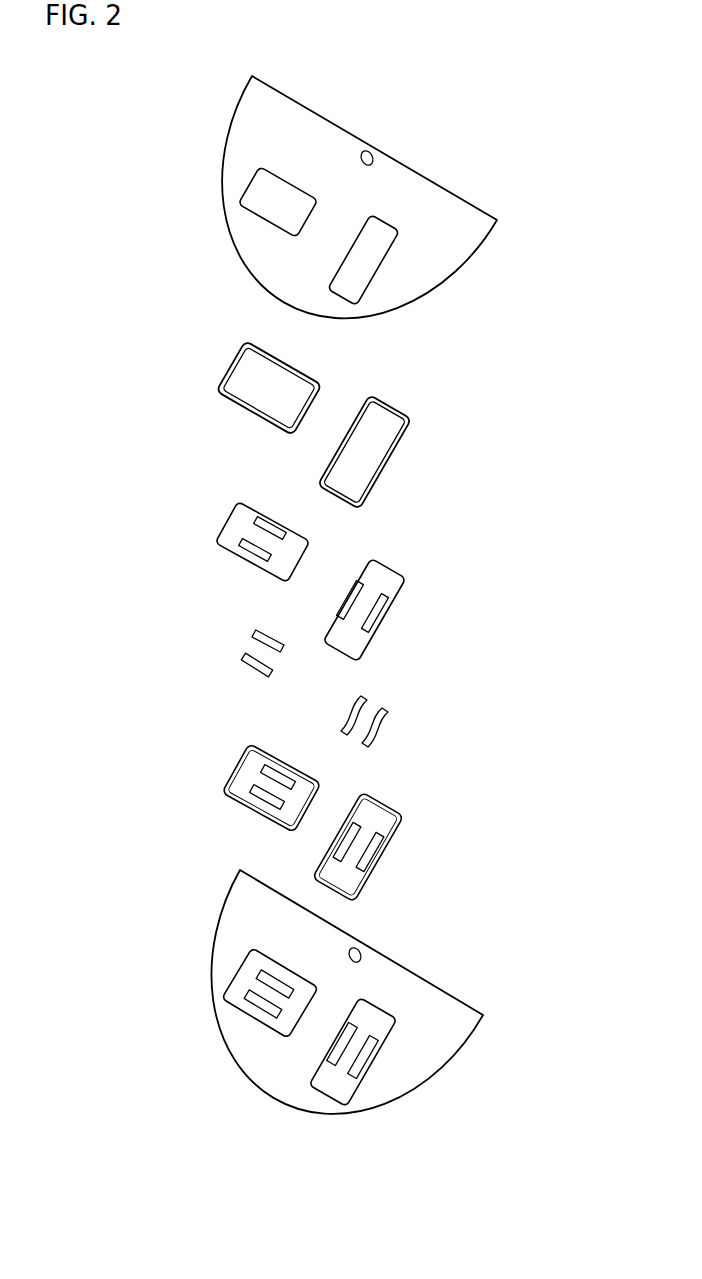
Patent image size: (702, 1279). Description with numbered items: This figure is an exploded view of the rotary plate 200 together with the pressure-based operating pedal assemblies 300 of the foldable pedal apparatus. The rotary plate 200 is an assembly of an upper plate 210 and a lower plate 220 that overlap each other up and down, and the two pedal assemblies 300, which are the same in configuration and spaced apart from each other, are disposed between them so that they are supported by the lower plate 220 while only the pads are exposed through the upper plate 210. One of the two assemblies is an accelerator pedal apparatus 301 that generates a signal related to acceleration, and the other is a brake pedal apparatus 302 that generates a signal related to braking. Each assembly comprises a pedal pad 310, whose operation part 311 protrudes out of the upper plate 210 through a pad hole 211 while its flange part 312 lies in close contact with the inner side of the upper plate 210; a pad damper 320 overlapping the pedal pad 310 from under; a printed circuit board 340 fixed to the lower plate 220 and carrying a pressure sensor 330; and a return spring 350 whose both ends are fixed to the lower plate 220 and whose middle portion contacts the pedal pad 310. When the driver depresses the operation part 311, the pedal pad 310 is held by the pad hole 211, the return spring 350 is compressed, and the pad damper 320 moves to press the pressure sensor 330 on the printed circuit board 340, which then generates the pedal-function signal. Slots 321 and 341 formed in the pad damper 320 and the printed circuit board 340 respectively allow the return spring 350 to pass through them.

The rotary plate 200 is at (218, 135).
The upper plate 210 is at (313, 130).
The pad hole 211 is at (270, 223).
The lower plate 220 is at (268, 1082).
The pressure-based operating pedal assemblies 300 is at (311, 631).
The accelerator pedal apparatus 301 is at (413, 582).
The brake pedal apparatus 302 is at (207, 543).
The pedal pad 310 is at (213, 392).
The operation part 311 is at (248, 363).
The flange part 312 is at (252, 415).
The pad damper 320 is at (238, 523).
The slot 321 is at (267, 530).
The pressure sensor 330 is at (233, 765).
The printed circuit board 340 is at (260, 812).
The slot 341 is at (268, 772).
The return spring 350 is at (253, 635).